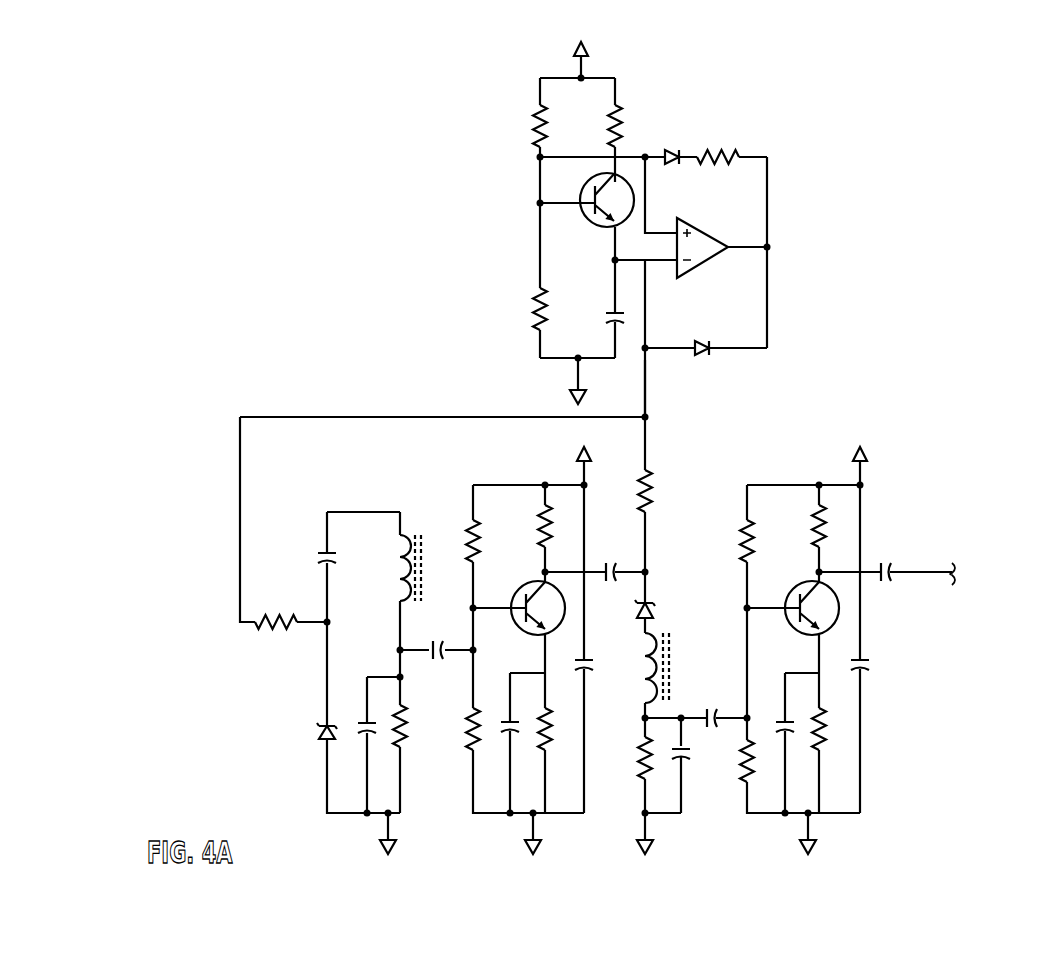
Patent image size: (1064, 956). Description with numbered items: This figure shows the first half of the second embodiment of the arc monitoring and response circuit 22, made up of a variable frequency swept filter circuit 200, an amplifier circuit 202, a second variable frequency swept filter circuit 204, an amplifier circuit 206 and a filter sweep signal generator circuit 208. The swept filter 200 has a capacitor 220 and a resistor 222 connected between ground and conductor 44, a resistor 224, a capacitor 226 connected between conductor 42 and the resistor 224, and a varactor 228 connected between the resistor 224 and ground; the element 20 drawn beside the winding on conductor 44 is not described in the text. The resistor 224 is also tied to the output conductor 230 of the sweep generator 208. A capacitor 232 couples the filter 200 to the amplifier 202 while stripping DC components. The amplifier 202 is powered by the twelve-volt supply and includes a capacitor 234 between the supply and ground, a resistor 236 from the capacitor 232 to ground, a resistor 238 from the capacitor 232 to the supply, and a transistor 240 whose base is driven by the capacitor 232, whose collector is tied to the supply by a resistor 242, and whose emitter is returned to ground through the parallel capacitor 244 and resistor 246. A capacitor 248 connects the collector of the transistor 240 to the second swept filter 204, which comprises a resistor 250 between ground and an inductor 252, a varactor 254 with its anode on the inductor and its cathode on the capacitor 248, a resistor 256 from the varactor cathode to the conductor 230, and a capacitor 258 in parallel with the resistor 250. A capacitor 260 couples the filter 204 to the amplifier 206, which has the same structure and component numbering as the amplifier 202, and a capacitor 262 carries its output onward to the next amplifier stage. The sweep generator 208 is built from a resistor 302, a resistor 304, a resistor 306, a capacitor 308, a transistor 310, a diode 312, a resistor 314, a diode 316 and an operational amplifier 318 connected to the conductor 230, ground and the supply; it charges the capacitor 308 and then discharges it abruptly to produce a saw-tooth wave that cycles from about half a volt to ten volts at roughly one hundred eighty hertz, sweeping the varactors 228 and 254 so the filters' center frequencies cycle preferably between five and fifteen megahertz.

The transformer 20 is at (429, 527).
The arc monitoring and response circuit 22 is at (358, 272).
The conductor 42 is at (368, 511).
The conductor 44 is at (399, 617).
The variable frequency (swept) filter circuit 200 is at (337, 831).
The amplifier circuit 202 is at (520, 829).
The second variable frequency (swept) filter circuit 204 is at (672, 827).
The amplifier circuit 206 is at (861, 824).
The filter sweep signal generator circuit 208 is at (794, 310).
The capacitor 220 is at (363, 742).
The resistor 222 is at (409, 718).
The resistor 224 is at (280, 630).
The capacitor 226 is at (318, 561).
The varactor 228 is at (325, 742).
The output conductor 230 is at (647, 388).
The capacitor 232 is at (437, 642).
The capacitor 234 is at (592, 662).
The resistor 236 is at (470, 752).
The resistor 238 is at (470, 547).
The transistor 240 is at (553, 610).
The resistor 242 is at (543, 531).
The capacitor 244 is at (518, 758).
The resistor 246 is at (548, 718).
The capacitor 248 is at (611, 565).
The resistor 250 is at (640, 765).
The inductor 252 is at (675, 640).
The varactor 254 is at (649, 604).
The resistor 256 is at (643, 491).
The capacitor 258 is at (687, 763).
The capacitor 260 is at (712, 705).
The capacitor 262 is at (884, 565).
The resistor 302 is at (537, 120).
The resistor 304 is at (611, 118).
The resistor 306 is at (536, 318).
The capacitor 308 is at (607, 316).
The transistor 310 is at (583, 194).
The diode 312 is at (669, 148).
The resistor 314 is at (712, 148).
The diode 316 is at (697, 341).
The operational amplifier 318 is at (700, 218).